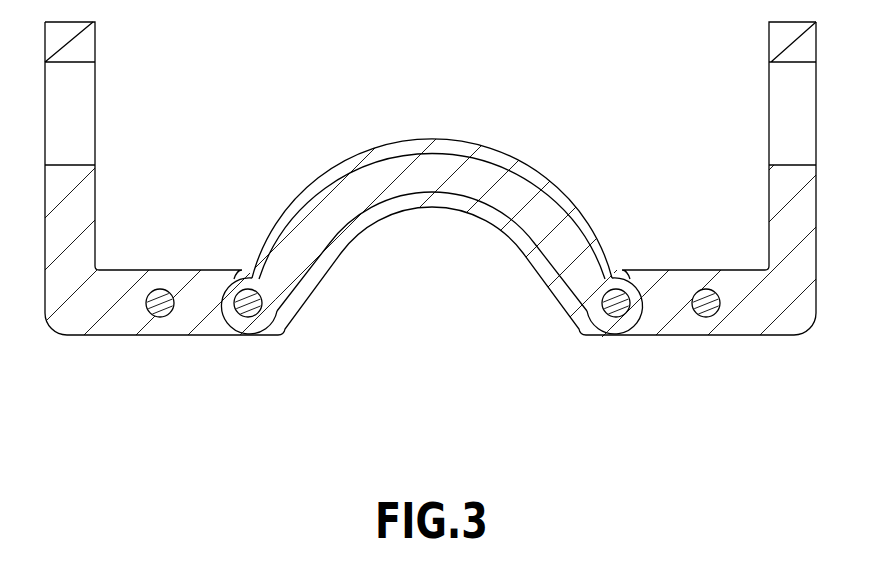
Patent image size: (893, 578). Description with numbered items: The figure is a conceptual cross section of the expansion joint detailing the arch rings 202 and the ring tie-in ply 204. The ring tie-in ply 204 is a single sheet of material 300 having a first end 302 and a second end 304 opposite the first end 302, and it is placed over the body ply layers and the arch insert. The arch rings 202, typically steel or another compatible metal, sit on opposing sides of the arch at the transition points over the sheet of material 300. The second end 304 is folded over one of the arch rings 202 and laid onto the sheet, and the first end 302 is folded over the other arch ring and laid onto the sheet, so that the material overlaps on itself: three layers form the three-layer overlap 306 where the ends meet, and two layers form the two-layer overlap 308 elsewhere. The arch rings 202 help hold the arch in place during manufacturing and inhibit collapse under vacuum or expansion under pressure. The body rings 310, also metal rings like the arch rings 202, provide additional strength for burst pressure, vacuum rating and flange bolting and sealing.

The sheet of material 300 is at (446, 200).
The first end 302 is at (323, 188).
The second end 304 is at (537, 202).
The 3 layer overlap 306 is at (427, 153).
The ring tie-in ply 204 is at (590, 250).
The 2 layer overlap 308 is at (273, 247).
The arch rings 202 is at (248, 317).
The body rings 310 is at (160, 317).